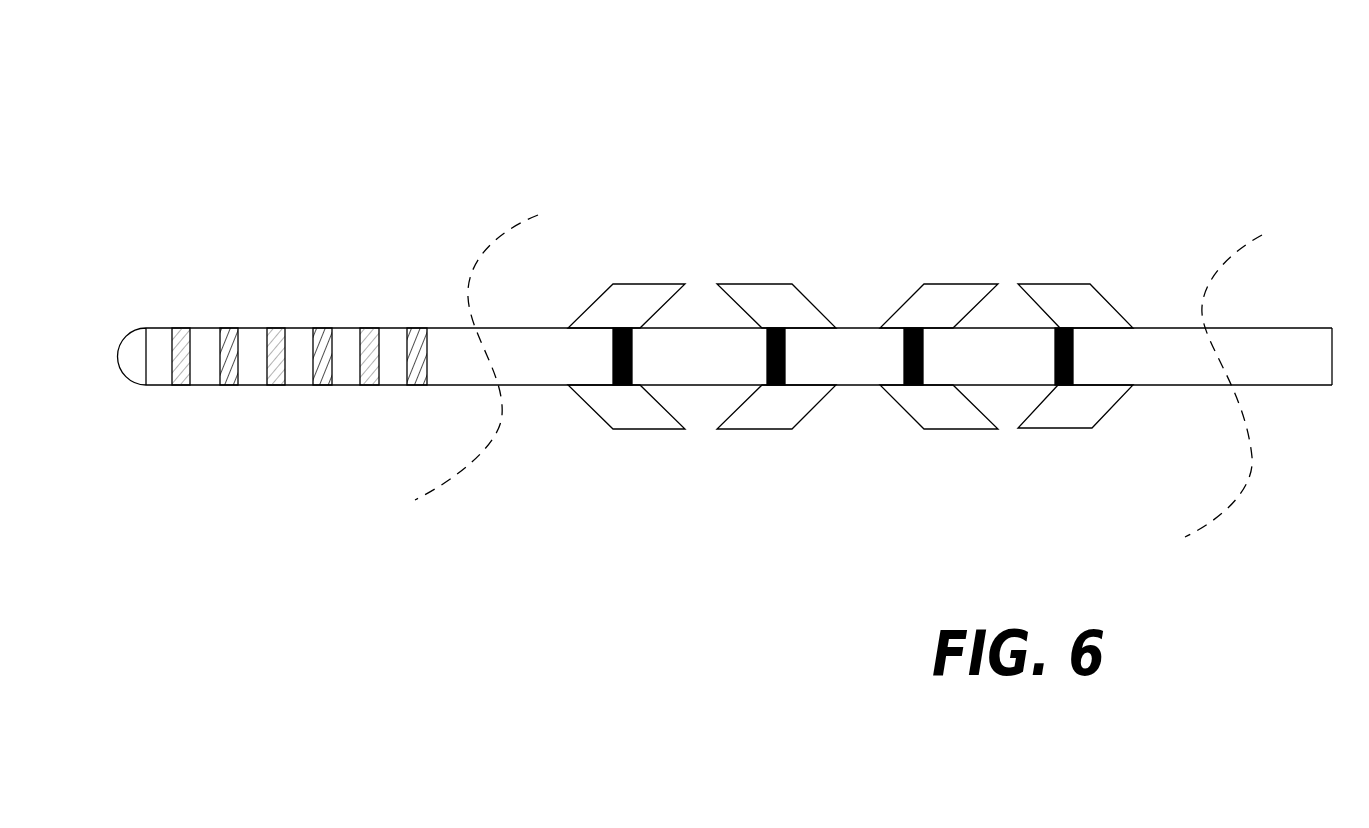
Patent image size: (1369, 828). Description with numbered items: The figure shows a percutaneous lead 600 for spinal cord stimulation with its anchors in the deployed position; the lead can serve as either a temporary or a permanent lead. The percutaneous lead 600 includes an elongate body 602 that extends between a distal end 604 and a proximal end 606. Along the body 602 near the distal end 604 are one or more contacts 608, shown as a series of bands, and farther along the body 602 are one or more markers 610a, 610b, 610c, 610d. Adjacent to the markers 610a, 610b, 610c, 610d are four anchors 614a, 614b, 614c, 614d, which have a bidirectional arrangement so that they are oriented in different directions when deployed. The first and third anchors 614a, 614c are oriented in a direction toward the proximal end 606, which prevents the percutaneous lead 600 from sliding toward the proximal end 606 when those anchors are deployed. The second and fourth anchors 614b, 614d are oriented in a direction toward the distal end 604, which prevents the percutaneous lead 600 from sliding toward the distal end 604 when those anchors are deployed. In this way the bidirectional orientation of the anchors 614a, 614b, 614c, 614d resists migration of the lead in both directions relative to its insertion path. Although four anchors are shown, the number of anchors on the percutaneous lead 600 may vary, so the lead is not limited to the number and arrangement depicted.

The percutaneous lead 600 is at (772, 218).
The body 602 is at (697, 387).
The distal end 604 is at (92, 337).
The proximal end 606 is at (1298, 305).
The contacts 608 is at (182, 357).
The marker 610a is at (613, 357).
The marker 610b is at (785, 355).
The marker 610c is at (923, 355).
The marker 610d is at (1073, 355).
The first anchor 614a is at (622, 315).
The second anchor 614b is at (788, 318).
The third anchor 614c is at (942, 305).
The fourth anchor 614d is at (1078, 303).